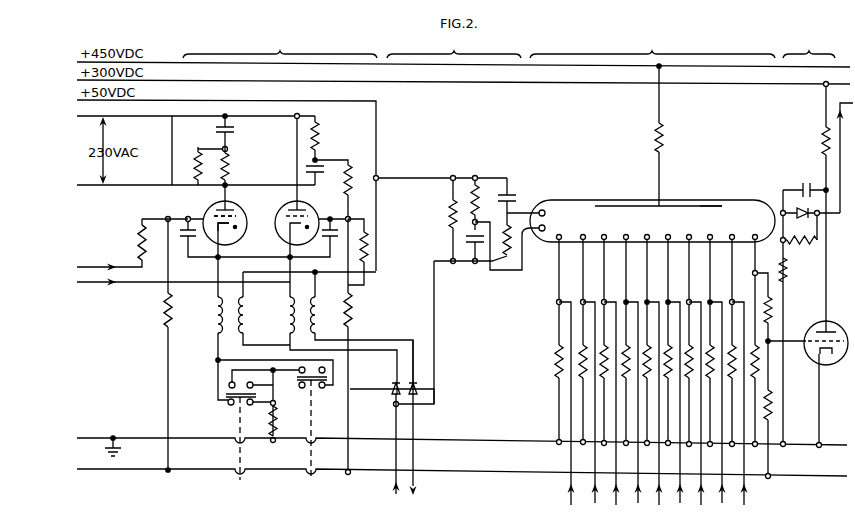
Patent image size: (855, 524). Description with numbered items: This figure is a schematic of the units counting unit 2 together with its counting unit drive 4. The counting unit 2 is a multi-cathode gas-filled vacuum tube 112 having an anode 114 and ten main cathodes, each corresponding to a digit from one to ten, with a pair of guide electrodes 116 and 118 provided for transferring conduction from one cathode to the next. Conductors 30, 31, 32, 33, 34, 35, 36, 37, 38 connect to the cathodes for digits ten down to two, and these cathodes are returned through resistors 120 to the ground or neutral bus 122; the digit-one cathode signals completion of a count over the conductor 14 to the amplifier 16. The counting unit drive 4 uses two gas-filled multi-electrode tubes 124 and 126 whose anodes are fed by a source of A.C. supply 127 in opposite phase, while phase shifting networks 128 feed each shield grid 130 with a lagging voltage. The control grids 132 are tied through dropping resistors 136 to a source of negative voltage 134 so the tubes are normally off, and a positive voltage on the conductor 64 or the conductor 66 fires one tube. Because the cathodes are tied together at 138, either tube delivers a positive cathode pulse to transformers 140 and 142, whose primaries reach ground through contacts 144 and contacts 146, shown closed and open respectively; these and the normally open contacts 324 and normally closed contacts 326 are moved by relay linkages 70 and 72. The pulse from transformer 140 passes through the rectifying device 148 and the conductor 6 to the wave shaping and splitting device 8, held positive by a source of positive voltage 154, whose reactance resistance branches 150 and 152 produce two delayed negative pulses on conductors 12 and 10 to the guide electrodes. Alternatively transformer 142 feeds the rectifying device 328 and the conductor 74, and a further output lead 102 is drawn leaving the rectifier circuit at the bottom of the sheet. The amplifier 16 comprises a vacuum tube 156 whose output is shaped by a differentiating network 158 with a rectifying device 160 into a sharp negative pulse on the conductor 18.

The units counting unit 2 is at (652, 46).
The counting unit drive 4 is at (280, 46).
The conductor 6 is at (435, 326).
The wave shaping and splitting device 8 is at (454, 46).
The conductor 10 is at (520, 212).
The conductor 12 is at (521, 240).
The conductor 14 is at (795, 345).
The amplifier 16 is at (809, 46).
The conductor 18 is at (842, 150).
The conductor 30 is at (569, 413).
The conductor 31 is at (592, 410).
The conductor 32 is at (614, 413).
The conductor 33 is at (635, 410).
The conductor 34 is at (657, 413).
The conductor 35 is at (678, 410).
The conductor 36 is at (699, 413).
The conductor 37 is at (720, 410).
The conductor 38 is at (743, 413).
The conductor 64 is at (97, 267).
The conductor 66 is at (97, 283).
The mechanical means 70 is at (240, 488).
The mechanical actuating means 72 is at (313, 484).
The conductor 74 is at (420, 497).
The output lead 102 is at (392, 497).
The multi-cathode gas-filled vacuum tube 112 is at (721, 200).
The anode 114 is at (630, 200).
The guide electrode 116 is at (545, 211).
The guide electrode 118 is at (541, 233).
The resistors 120 is at (556, 366).
The ground or neutral bus 122 is at (502, 441).
The gas-filled multi-electrode tube 124 is at (208, 209).
The gas-filled multi-electrode tube 126 is at (306, 209).
The source of A.C. supply 127 is at (192, 166).
The phase shifting networks 128 is at (233, 164).
The shield grid 130 is at (237, 210).
The control grids 132 is at (239, 224).
The source of negative voltage 134 is at (203, 470).
The dropping resistors 136 is at (166, 312).
The cathode tie point 138 is at (263, 258).
The transformer 140 is at (222, 333).
The transformer 142 is at (291, 333).
The contacts 144 is at (228, 405).
The contacts 146 is at (229, 383).
The rectifying device 148 is at (393, 390).
The reactance resistance branch 150 is at (478, 177).
The reactance resistance branch 152 is at (496, 262).
The source of positive voltage 154 is at (376, 125).
The vacuum tube 156 is at (812, 331).
The differentiating network 158 is at (800, 187).
The rectifying device 160 is at (797, 212).
The normally open contacts 324 is at (325, 370).
The normally closed contacts 326 is at (325, 386).
The rectifying device 328 is at (434, 389).